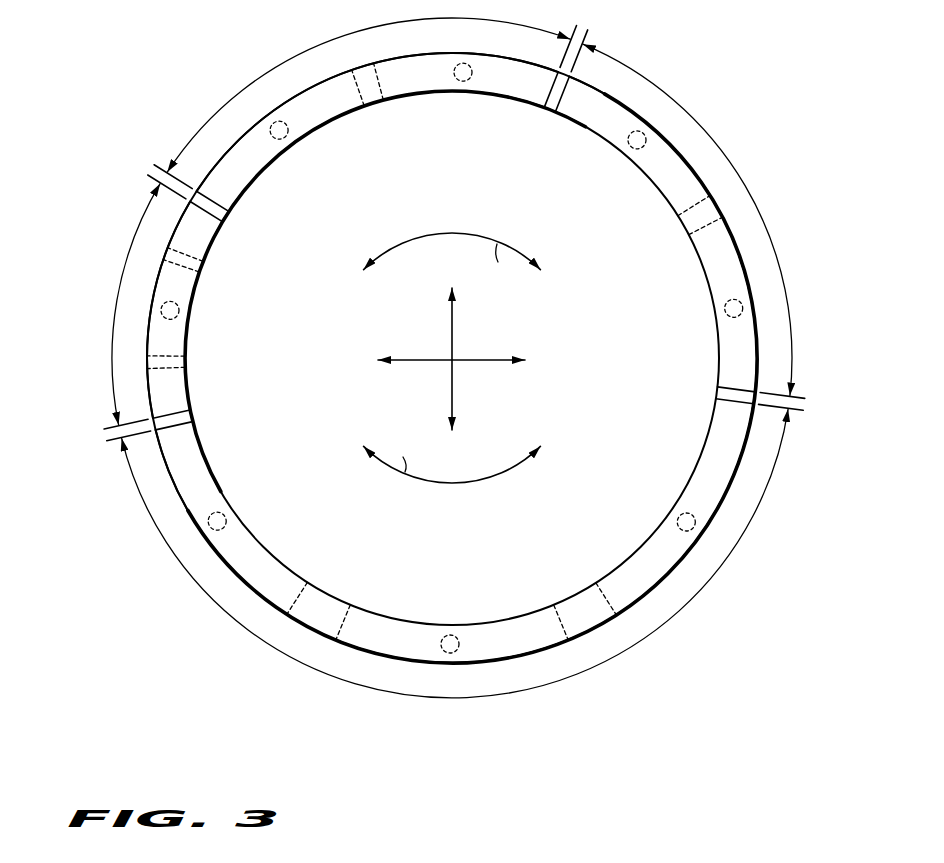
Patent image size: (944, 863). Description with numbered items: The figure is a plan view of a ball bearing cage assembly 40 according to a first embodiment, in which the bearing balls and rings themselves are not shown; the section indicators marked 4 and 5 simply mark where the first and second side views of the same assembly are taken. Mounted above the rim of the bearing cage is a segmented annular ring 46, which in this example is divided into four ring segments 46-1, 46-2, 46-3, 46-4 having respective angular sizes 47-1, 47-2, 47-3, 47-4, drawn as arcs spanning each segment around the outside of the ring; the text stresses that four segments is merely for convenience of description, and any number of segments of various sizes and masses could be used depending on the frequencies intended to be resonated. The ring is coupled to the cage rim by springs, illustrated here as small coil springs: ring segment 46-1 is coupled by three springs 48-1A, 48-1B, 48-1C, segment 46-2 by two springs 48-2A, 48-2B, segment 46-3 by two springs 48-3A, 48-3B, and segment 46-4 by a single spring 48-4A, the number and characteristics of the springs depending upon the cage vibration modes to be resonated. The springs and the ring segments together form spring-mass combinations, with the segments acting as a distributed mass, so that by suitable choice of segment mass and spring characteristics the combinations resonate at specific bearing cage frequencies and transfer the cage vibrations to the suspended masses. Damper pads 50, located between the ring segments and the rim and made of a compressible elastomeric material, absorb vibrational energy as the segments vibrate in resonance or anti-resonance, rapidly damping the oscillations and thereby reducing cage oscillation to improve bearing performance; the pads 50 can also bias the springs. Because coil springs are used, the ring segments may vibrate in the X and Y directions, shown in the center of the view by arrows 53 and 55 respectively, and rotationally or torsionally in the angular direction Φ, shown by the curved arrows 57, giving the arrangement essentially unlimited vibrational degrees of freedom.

The ball bearing cage assembly 40 is at (208, 693).
The segmented annular ring 46 is at (228, 468).
The ring segment 46-1 is at (715, 440).
The ring segment 46-2 is at (585, 118).
The ring segment 46-3 is at (243, 177).
The ring segment 46-4 is at (178, 395).
The angular size 47-1 is at (695, 600).
The angular size 47-2 is at (738, 152).
The angular size 47-3 is at (318, 43).
The angular size 47-4 is at (106, 346).
The spring 48-1A is at (225, 516).
The spring 48-1B is at (451, 635).
The spring 48-1C is at (679, 516).
The spring 48-2A is at (725, 313).
The spring 48-2B is at (631, 147).
The spring 48-3A is at (463, 82).
The spring 48-3B is at (285, 137).
The spring 48-4A is at (179, 313).
The damper pad 50 is at (375, 100).
The arrow 53 is at (420, 360).
The arrow 55 is at (455, 395).
The arrow 57 is at (448, 237).
The section line for FIG. 4 is at (452, 720).
The section line for FIG. 5 is at (822, 408).